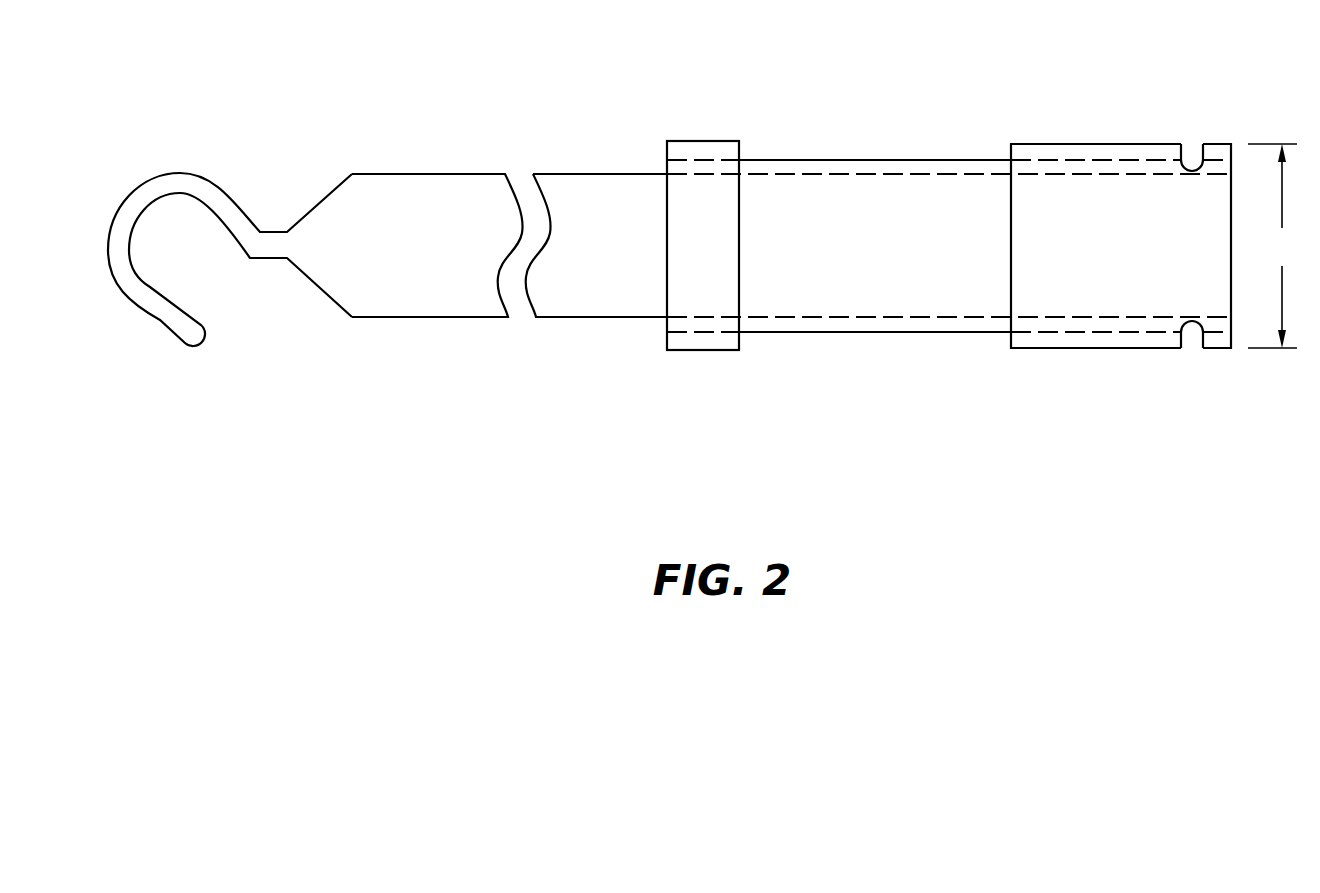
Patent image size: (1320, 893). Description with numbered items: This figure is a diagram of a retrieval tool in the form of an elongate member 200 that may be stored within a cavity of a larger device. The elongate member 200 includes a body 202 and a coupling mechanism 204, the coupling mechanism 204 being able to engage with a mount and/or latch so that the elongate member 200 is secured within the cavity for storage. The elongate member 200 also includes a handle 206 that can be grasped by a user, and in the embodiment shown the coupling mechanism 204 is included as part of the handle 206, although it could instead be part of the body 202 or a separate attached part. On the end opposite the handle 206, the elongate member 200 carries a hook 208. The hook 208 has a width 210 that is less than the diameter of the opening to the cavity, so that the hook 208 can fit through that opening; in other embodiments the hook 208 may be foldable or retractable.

The elongate member 200 is at (863, 105).
The body 202 is at (618, 318).
The coupling mechanism 204 is at (1190, 340).
The handle 206 is at (1052, 347).
The hook 208 is at (183, 172).
The width 210 is at (1276, 246).